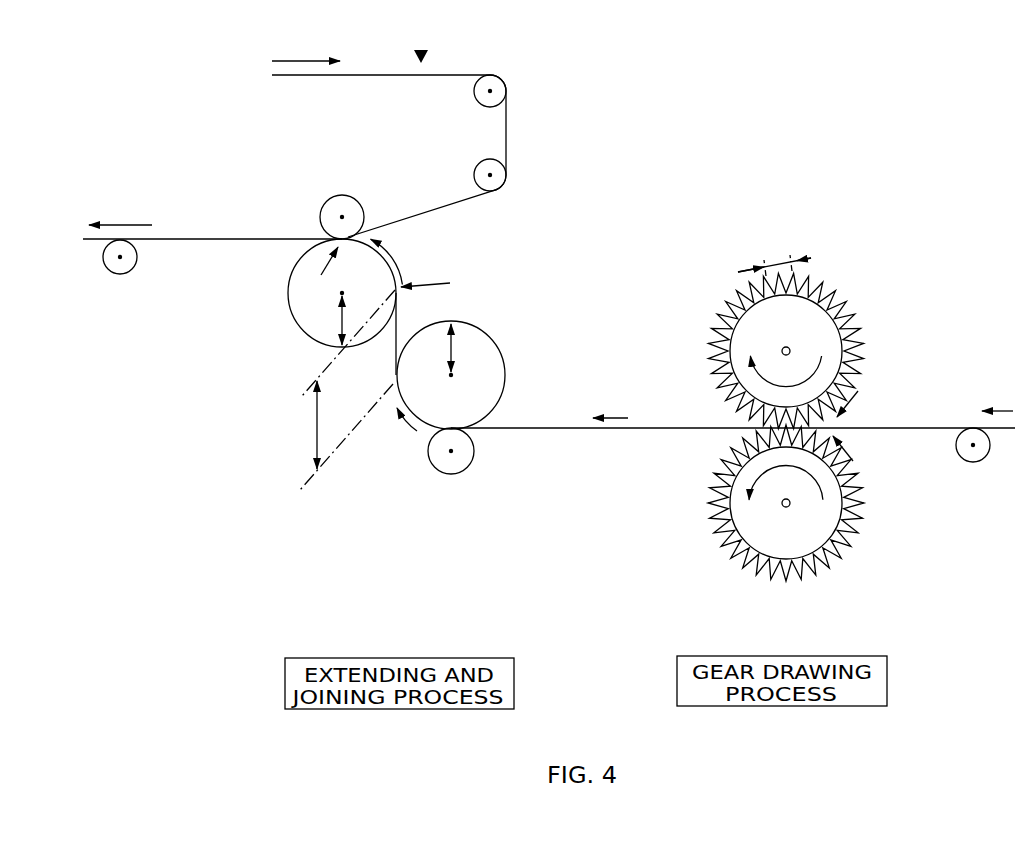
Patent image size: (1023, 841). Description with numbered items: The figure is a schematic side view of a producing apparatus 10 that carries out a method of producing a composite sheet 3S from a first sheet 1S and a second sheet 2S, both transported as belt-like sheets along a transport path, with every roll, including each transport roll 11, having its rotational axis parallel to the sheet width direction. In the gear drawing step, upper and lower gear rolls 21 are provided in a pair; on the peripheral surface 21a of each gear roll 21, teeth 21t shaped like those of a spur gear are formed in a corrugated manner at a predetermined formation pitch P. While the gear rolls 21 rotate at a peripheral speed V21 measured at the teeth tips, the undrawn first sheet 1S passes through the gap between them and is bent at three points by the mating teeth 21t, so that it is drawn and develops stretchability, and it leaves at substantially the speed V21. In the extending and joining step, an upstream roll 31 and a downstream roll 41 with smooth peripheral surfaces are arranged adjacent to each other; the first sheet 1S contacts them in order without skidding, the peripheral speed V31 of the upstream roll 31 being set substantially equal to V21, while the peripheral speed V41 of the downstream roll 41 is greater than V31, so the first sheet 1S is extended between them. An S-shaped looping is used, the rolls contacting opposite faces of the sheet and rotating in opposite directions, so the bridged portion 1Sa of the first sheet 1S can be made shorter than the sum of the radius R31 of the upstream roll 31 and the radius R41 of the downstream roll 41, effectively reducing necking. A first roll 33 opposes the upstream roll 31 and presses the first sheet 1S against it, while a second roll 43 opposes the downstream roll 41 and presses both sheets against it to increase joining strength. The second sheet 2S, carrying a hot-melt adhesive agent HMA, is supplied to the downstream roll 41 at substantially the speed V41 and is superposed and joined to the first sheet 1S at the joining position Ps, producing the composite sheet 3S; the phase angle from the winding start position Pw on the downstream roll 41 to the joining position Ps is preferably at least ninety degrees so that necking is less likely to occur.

The producing apparatus 10 is at (796, 93).
The transport roll 11 is at (465, 83).
The gear roll 21 is at (713, 299).
The peripheral surface of gear roll 21a is at (827, 332).
The teeth 21t is at (822, 290).
The upstream roll 31 is at (500, 355).
The first roll 33 is at (449, 467).
The downstream roll 41 is at (273, 282).
The second roll 43 is at (334, 187).
The first sheet 1S is at (524, 418).
The bridged portion of first sheet 1Sa is at (332, 390).
The second sheet 2S is at (410, 205).
The composite sheet 3S is at (217, 229).
The hot-melt adhesive agent HMA is at (421, 41).
The formation pitch P is at (774, 251).
The joining position Ps is at (321, 274).
The winding start position Pw is at (445, 280).
The radius of downstream roll R41 is at (320, 320).
The radius of upstream roll R31 is at (429, 348).
The peripheral speed of downstream roll V41 is at (262, 241).
The peripheral speed of upstream roll V31 is at (393, 431).
The peripheral speed of gear roll V21 is at (749, 428).